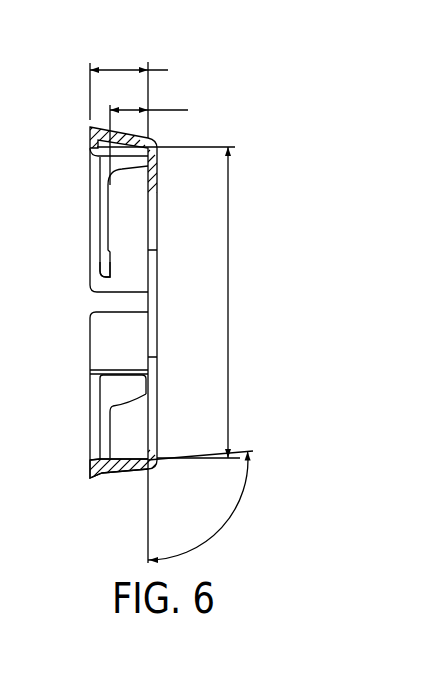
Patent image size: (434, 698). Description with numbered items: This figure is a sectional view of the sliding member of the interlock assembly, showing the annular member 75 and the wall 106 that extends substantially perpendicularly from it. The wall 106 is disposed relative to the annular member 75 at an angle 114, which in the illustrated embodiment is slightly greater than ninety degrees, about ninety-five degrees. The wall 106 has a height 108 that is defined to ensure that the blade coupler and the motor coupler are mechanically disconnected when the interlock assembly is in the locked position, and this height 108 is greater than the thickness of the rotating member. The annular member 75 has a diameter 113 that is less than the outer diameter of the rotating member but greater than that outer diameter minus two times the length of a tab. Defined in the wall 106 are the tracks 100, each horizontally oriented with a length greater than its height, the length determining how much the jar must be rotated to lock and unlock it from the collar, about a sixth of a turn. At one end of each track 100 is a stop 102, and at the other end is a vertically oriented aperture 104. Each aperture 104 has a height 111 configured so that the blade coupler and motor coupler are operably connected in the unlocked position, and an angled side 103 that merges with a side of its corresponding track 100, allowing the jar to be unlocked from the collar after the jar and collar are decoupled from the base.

The annular member 75 is at (149, 220).
The track 100 is at (96, 190).
The stop 102 is at (104, 262).
The angled side 103 is at (137, 398).
The aperture 104 is at (112, 388).
The wall 106 is at (122, 474).
The height of the wall 108 is at (122, 70).
The height of the aperture 111 is at (128, 110).
The diameter of the annular element 113 is at (230, 300).
The angle 114 is at (221, 530).